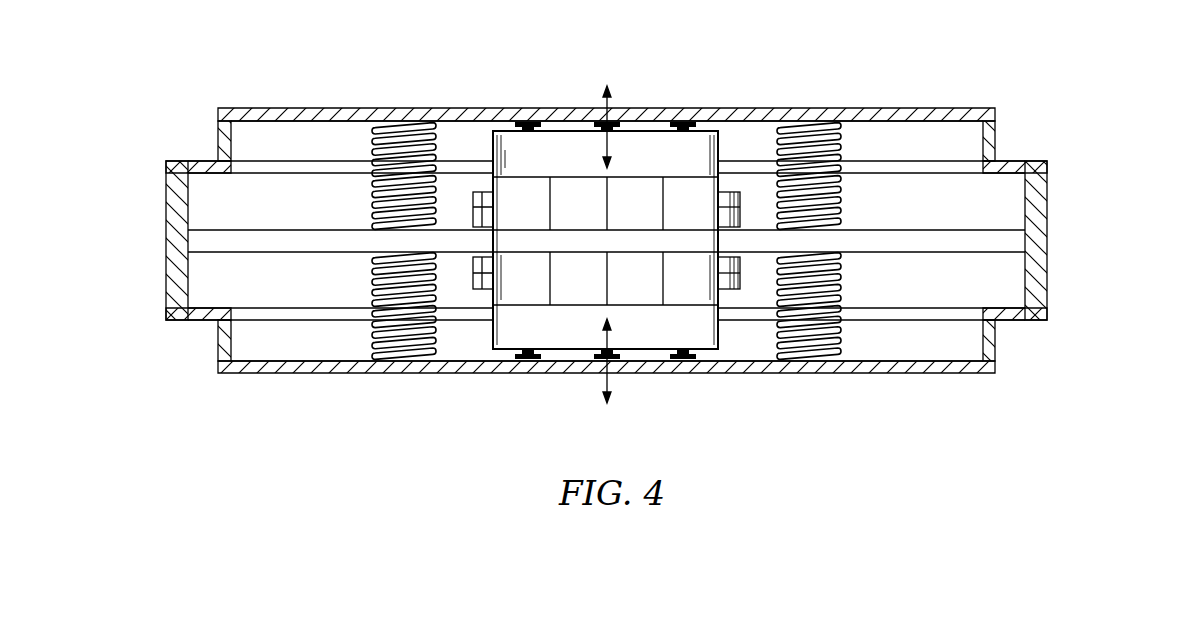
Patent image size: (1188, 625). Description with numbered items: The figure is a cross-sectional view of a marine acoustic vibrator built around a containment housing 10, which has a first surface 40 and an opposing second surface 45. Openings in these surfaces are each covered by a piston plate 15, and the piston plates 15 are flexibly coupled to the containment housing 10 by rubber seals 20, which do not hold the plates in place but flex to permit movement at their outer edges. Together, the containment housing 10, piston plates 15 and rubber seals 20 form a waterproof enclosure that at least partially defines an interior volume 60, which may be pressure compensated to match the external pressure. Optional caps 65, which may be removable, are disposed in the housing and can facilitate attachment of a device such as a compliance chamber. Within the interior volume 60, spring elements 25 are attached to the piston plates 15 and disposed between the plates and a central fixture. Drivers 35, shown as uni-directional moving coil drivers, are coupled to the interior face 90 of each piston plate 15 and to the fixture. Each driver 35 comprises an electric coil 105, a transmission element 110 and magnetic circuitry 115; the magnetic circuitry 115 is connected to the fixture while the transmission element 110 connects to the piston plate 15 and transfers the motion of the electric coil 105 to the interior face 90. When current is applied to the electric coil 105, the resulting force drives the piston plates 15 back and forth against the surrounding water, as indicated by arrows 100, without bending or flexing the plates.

The containment housing 10 is at (1048, 196).
The piston plates 15 is at (720, 141).
The rubber seals 20 is at (990, 125).
The spring elements 25 is at (372, 127).
The drivers 35 is at (491, 120).
The first surface 40 is at (178, 160).
The second surface 45 is at (187, 318).
The interior volume 60 is at (213, 288).
The caps 65 is at (200, 253).
The interior face 90 is at (899, 128).
The arrows 100 is at (610, 120).
The electric coil 105 is at (483, 191).
The transmission element 110 is at (733, 191).
The magnetic circuitry 115 is at (737, 192).